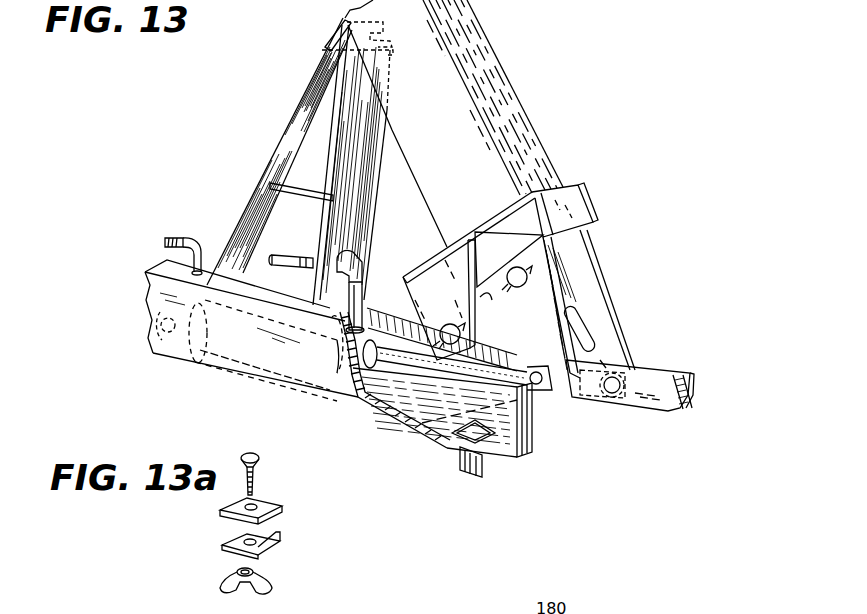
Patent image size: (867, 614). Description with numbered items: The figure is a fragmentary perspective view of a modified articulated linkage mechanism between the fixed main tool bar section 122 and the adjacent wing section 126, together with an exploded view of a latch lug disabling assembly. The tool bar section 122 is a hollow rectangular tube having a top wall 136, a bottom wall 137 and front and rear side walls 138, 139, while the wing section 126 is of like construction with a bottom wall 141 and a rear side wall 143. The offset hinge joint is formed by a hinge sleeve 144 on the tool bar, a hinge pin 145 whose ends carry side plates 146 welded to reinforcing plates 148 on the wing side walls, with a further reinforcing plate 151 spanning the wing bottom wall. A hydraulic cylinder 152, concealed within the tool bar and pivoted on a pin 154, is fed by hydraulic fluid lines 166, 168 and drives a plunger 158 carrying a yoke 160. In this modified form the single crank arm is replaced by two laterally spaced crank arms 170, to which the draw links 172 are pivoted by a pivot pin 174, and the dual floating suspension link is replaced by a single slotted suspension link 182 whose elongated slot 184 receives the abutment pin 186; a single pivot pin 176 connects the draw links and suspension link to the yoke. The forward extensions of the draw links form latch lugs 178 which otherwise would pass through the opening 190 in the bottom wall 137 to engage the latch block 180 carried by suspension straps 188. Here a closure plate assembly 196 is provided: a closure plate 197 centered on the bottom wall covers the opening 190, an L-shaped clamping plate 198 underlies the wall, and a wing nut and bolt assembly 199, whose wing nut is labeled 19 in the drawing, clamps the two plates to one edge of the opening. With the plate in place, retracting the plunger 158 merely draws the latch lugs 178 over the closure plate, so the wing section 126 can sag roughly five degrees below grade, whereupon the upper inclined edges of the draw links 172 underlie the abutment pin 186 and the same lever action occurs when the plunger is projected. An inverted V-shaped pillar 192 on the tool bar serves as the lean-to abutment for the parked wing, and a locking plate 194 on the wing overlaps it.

In FIG. 13a, the wing nut 19 is at (266, 575).
In FIG. 13, the tool bar section 122 is at (247, 388).
In FIG. 13, the wing section 126 is at (445, 113).
In FIG. 13, the top wall 136 is at (382, 307).
In FIG. 13, the bottom wall 137 is at (392, 428).
In FIG. 13, the front side wall 138 is at (510, 407).
In FIG. 13, the rear side wall 139 is at (327, 397).
In FIG. 13, the bottom wall 141 is at (498, 78).
In FIG. 13, the rear side wall 143 is at (446, 66).
In FIG. 13, the hinge sleeve 144 is at (485, 300).
In FIG. 13, the hinge pin 145 is at (455, 322).
In FIG. 13, the side plates 146 is at (437, 262).
In FIG. 13, the reinforcing plates 148 is at (497, 218).
In FIG. 13, the reinforcing plate 151 is at (568, 203).
In FIG. 13, the hydraulic cylinder 152 is at (207, 370).
In FIG. 13, the pin 154 is at (162, 324).
In FIG. 13, the plunger 158 is at (420, 373).
In FIG. 13, the yoke 160 is at (626, 364).
In FIG. 13, the hydraulic fluid line 166 is at (192, 236).
In FIG. 13, the hydraulic fluid line 168 is at (287, 255).
In FIG. 13, the crank arms 170 is at (547, 278).
In FIG. 13, the draw links 172 is at (593, 387).
In FIG. 13, the pivot pin 174 is at (543, 371).
In FIG. 13, the pivot pin 176 is at (613, 398).
In FIG. 13, the latch lugs 178 is at (695, 393).
In FIG. 13, the latch block 180 is at (460, 470).
In FIG. 13, the slotted suspension link 182 is at (600, 355).
In FIG. 13, the elongated slot 184 is at (575, 313).
In FIG. 13, the abutment pin 186 is at (525, 282).
In FIG. 13, the suspension straps 188 is at (530, 447).
In FIG. 13, the opening 190 is at (467, 442).
In FIG. 13, the inverted V-shaped pillar 192 is at (281, 121).
In FIG. 13, the locking plate 194 is at (340, 47).
In FIG. 13, the closure plate assembly 196 is at (393, 46).
In FIG. 13a, the closure plate assembly 196 is at (213, 508).
In FIG. 13a, the closure plate 197 is at (272, 500).
In FIG. 13a, the L-shaped clamping plate 198 is at (282, 540).
In FIG. 13a, the wing nut and bolt assembly 199 is at (257, 478).